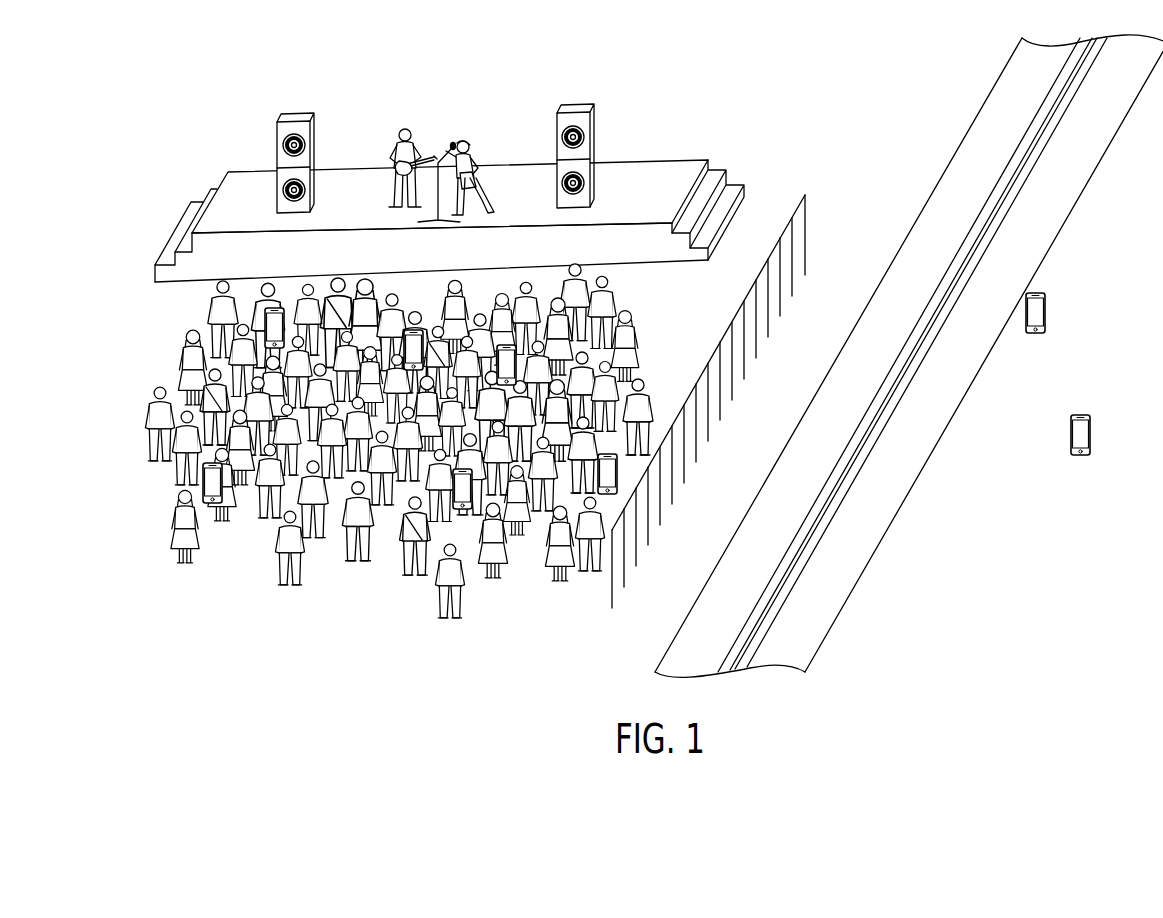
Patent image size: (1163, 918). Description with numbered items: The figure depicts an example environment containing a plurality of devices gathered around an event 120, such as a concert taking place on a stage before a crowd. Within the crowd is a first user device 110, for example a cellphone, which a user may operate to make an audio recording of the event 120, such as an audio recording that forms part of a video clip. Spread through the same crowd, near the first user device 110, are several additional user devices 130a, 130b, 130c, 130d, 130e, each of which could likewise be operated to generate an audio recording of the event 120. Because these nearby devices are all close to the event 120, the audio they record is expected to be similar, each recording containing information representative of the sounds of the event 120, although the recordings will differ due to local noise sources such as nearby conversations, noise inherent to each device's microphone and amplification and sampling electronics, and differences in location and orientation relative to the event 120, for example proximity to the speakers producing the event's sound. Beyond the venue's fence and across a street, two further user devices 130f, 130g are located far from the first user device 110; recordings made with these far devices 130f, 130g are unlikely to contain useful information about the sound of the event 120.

The first user device 110 is at (417, 328).
The event 120 is at (497, 126).
The additional user device 130a is at (515, 345).
The additional user device 130b is at (617, 477).
The additional user device 130c is at (457, 509).
The additional user device 130d is at (212, 503).
The additional user device 130e is at (265, 322).
The far user device 130f is at (1046, 308).
The far user device 130g is at (1091, 432).